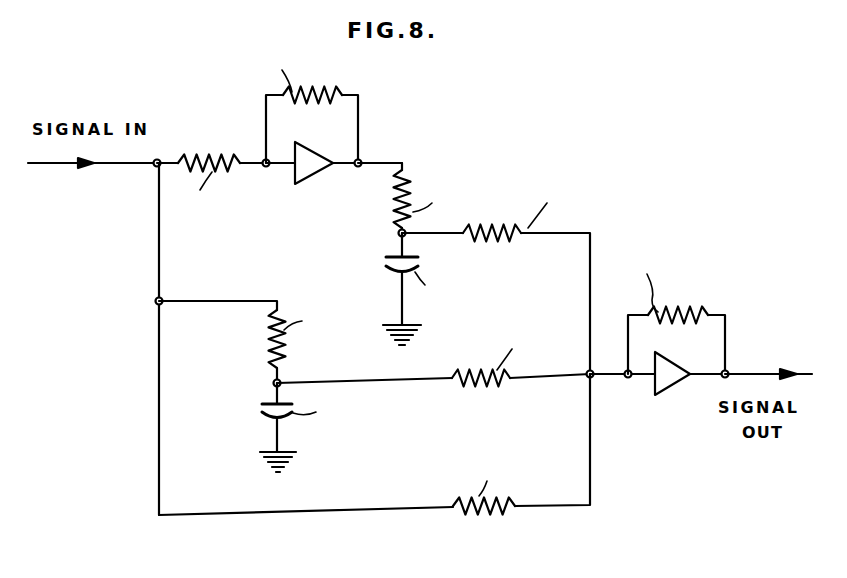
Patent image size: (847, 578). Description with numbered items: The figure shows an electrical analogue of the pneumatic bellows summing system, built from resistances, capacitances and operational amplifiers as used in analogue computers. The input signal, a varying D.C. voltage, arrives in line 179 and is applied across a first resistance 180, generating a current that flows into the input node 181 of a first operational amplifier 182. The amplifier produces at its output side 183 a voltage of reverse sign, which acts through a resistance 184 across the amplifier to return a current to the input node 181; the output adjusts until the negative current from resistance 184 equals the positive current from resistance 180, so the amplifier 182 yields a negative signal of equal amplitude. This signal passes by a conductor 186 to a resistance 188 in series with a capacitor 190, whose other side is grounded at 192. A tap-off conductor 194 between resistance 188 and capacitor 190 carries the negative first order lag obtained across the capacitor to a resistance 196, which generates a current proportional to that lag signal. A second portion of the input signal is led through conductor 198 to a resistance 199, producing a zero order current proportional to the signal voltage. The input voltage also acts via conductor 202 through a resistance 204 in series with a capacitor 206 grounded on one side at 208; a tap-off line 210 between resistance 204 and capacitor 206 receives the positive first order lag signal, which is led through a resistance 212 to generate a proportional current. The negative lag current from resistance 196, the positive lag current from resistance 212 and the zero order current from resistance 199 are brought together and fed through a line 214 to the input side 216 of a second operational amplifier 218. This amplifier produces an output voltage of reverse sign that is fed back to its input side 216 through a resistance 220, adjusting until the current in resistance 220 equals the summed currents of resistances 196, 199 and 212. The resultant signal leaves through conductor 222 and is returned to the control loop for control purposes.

The input signal line 179 is at (97, 166).
The first resistance 180 is at (200, 155).
The input node 181 is at (270, 167).
The first operational amplifier 182 is at (309, 173).
The output side 183 is at (333, 164).
The resistance 184 is at (338, 91).
The conductor 186 is at (380, 160).
The resistance 188 is at (410, 180).
The capacitor 190 is at (384, 262).
The ground 192 is at (408, 337).
The tap-off conductor 194 is at (452, 232).
The resistance 196 is at (490, 241).
The conductor 198 is at (157, 270).
The resistance 199 is at (503, 514).
The conductor 202 is at (202, 300).
The resistance 204 is at (272, 364).
The capacitor 206 is at (262, 411).
The ground 208 is at (266, 458).
The tap-off line 210 is at (315, 382).
The resistance 212 is at (480, 384).
The line 214 is at (586, 378).
The input side 216 is at (654, 376).
The second operational amplifier 218 is at (673, 383).
The resistance 220 is at (692, 310).
The conductor 222 is at (754, 370).